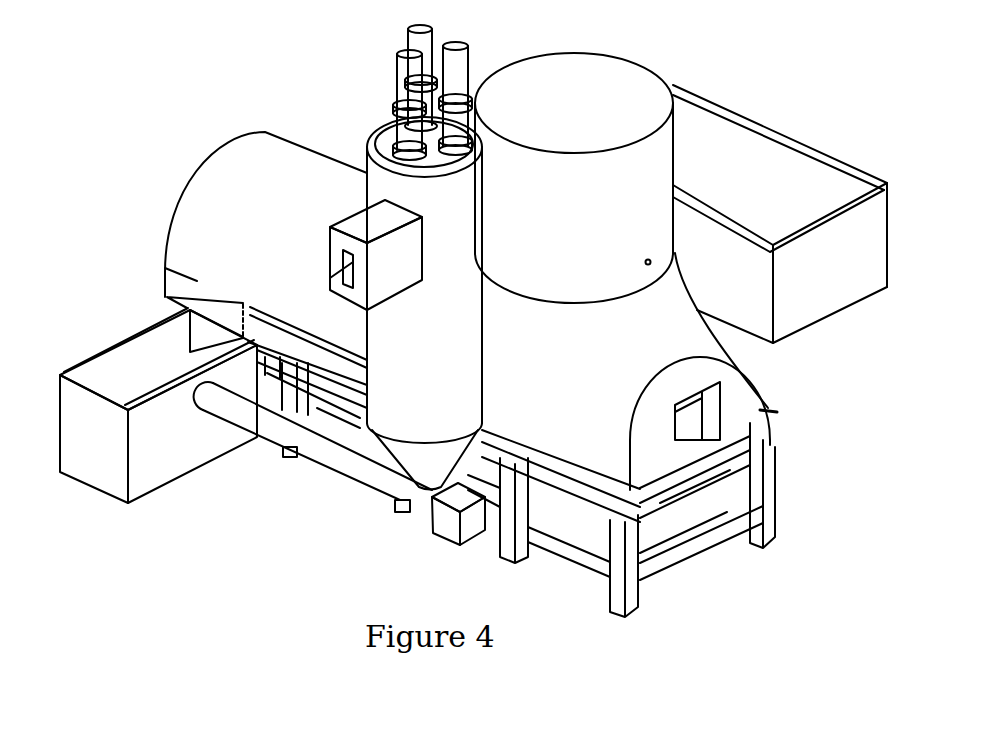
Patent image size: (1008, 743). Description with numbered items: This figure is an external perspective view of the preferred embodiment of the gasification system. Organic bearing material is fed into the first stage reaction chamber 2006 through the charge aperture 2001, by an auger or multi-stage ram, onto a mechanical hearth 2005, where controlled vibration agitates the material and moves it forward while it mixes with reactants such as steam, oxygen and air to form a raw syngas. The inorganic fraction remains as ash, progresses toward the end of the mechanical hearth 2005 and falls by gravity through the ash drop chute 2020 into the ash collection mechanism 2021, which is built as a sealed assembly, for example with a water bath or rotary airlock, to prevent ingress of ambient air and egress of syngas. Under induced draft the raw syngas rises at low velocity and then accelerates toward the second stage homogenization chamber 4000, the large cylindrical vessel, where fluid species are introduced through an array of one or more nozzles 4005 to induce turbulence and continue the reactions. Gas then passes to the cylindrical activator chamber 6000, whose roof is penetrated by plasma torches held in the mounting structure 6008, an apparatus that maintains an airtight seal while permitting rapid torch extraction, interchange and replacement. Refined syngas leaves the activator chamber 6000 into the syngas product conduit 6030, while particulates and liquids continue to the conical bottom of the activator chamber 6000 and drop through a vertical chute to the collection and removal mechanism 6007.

The activator chamber 6000 is at (373, 175).
The mounting structure 6008 is at (392, 135).
The syngas product conduit 6030 is at (343, 253).
The ash drop chute 2020 is at (206, 312).
The ash collection mechanism 2021 is at (163, 378).
The first stage reaction chamber 2006 is at (317, 288).
The collection and removal mechanism 6007 is at (373, 473).
The mechanical hearth 2005 is at (693, 465).
The second stage homogenization chamber 4000 is at (672, 115).
The nozzles 4005 is at (652, 267).
The charge aperture 2001 is at (693, 412).